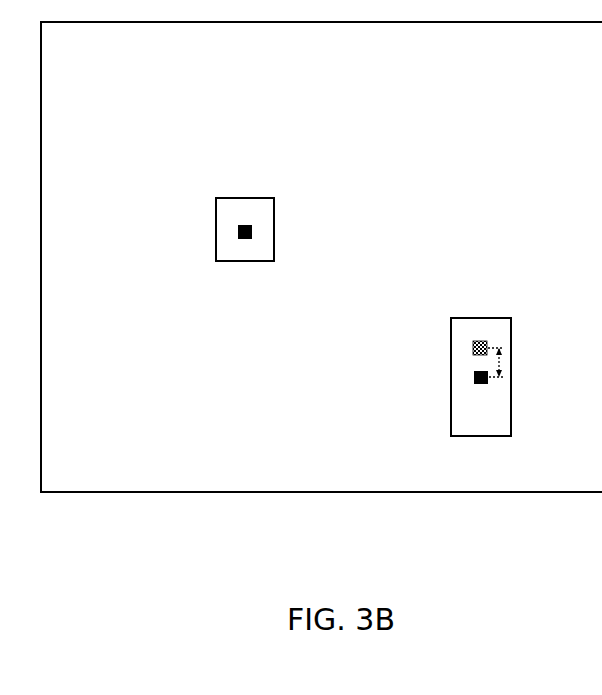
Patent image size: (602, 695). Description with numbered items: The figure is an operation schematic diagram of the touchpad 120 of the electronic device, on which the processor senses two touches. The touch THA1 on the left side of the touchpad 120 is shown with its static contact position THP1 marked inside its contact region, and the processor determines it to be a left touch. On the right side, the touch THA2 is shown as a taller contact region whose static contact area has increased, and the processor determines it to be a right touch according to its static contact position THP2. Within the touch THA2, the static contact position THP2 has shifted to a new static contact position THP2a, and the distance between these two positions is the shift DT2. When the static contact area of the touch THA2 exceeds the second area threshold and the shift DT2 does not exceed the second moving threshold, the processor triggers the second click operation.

The touchpad 120 is at (112, 70).
The touch THA1 is at (262, 178).
The static contact position THP1 is at (224, 227).
The touch THA2 is at (502, 298).
The static contact position THP2 is at (458, 343).
The new static contact position THP2a is at (460, 375).
The shift DT2 is at (530, 363).